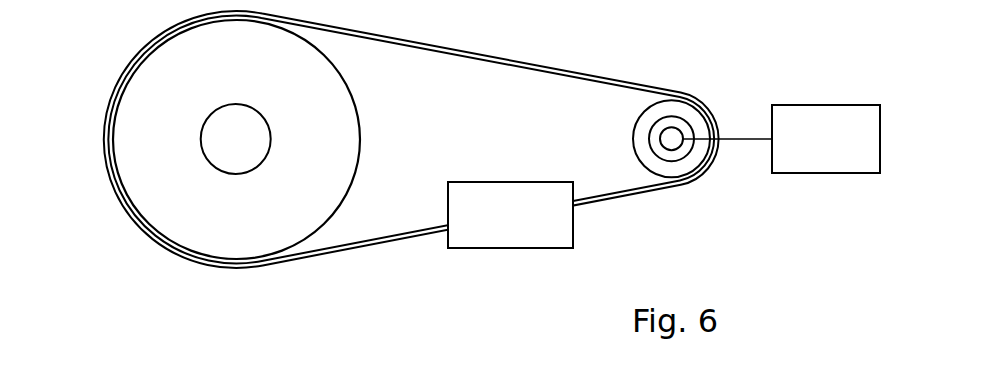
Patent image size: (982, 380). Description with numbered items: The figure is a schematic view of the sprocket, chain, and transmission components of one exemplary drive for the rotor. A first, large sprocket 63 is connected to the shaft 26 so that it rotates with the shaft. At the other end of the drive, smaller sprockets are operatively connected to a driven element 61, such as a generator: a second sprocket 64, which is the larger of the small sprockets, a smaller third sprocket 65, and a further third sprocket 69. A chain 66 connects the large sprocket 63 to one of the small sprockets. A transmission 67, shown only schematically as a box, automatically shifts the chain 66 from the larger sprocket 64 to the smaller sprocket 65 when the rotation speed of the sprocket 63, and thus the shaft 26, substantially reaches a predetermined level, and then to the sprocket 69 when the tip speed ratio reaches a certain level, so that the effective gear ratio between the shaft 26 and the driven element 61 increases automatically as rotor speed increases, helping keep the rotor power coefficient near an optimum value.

The shaft 26 is at (248, 134).
The driven element 61 is at (847, 163).
The large sprocket 63 is at (333, 100).
The second sprocket 64 is at (645, 146).
The third sprocket 65 is at (668, 155).
The chain 66 is at (337, 252).
The transmission 67 is at (531, 240).
The third sprocket 69 is at (665, 131).